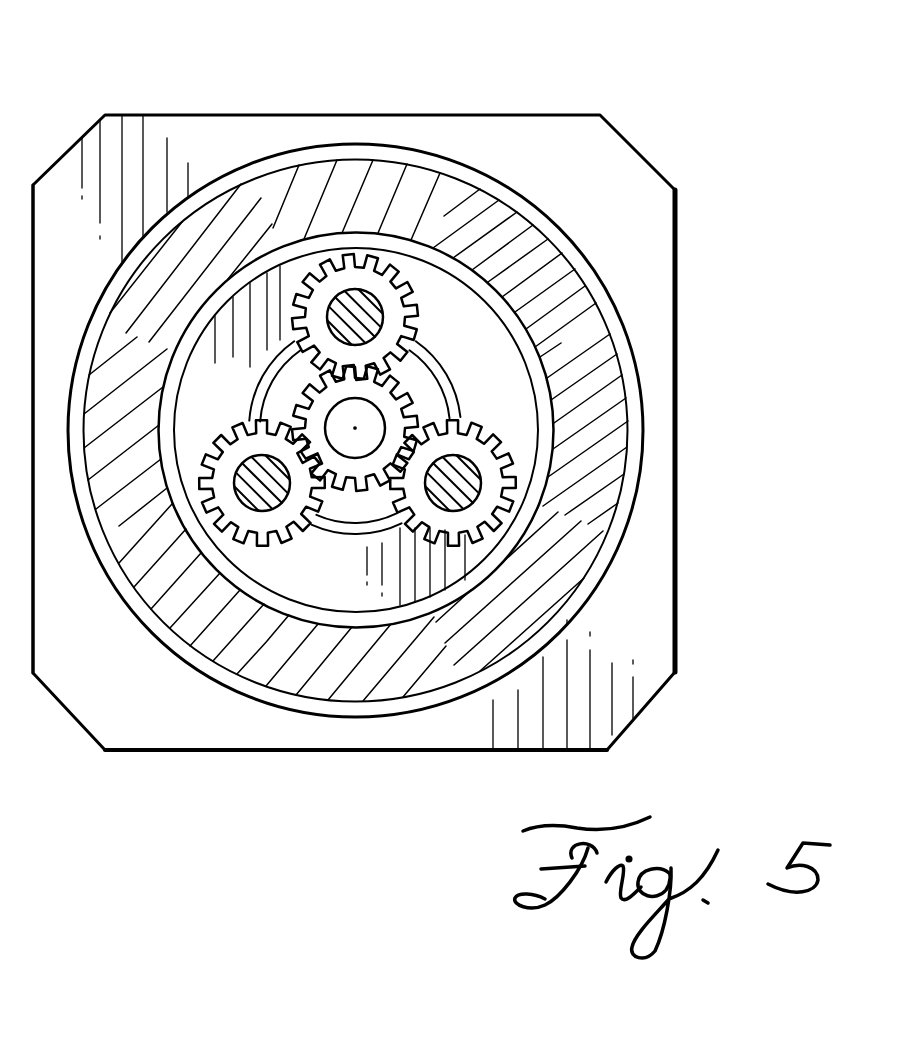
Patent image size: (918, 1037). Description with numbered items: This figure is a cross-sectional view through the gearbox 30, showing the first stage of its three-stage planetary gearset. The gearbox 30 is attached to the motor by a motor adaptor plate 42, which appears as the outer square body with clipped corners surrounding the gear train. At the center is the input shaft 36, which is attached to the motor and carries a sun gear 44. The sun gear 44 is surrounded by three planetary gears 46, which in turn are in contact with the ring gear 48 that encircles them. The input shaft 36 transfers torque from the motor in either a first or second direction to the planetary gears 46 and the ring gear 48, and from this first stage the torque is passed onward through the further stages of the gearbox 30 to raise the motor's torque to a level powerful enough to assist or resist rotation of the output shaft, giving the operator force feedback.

The gearbox 30 is at (420, 439).
The motor adaptor plate 42 is at (647, 181).
The ring gear 48 is at (263, 668).
The sun gear 44 is at (425, 347).
The input shaft 36 is at (367, 425).
The planetary gears 46 is at (513, 466).